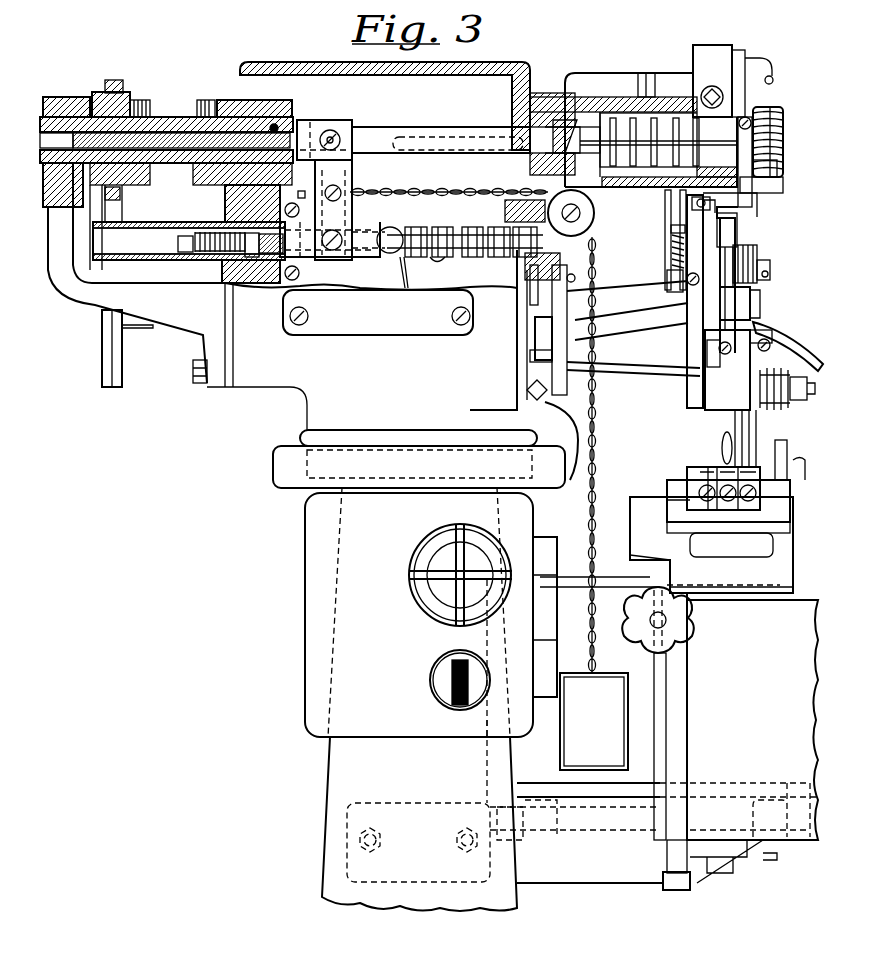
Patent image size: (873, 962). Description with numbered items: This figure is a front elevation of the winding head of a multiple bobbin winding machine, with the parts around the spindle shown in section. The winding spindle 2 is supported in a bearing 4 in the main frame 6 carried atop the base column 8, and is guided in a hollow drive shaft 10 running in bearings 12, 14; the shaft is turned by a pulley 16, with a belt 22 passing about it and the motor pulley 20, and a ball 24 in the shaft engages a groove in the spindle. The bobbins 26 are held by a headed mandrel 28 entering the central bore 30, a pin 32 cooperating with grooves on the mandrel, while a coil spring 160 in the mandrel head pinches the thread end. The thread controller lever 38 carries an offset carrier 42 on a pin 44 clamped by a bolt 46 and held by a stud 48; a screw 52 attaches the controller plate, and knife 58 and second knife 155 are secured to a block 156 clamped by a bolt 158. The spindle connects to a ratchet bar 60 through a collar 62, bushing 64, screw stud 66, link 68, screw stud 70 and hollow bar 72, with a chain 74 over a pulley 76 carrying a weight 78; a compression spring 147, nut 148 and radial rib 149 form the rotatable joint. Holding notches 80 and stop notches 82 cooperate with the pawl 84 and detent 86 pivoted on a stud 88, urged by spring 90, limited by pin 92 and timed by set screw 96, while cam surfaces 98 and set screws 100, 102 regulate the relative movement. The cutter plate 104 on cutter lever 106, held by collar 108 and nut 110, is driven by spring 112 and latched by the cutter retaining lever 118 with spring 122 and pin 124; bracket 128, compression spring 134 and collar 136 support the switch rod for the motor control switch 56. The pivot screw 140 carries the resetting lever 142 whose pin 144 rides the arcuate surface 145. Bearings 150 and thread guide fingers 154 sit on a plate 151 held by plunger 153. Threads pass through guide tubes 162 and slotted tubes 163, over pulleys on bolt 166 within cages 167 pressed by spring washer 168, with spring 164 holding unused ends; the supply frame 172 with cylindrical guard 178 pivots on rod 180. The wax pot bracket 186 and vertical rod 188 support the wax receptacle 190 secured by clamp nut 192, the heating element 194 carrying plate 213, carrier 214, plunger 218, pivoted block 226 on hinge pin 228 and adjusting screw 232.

The winding spindle 2 is at (412, 135).
The bearing 4 is at (520, 112).
The main frame 6 is at (424, 330).
The base column 8 is at (419, 702).
The hollow drive shaft 10 is at (166, 130).
The bearing 12 is at (68, 97).
The bearing 14 is at (226, 98).
The pulley 16 is at (112, 95).
The pulley 20 is at (102, 330).
The belt 22 is at (108, 365).
The ball 24 is at (278, 124).
The bobbins 26 is at (632, 118).
The headed mandrel 28 is at (545, 137).
The central bore 30 is at (558, 118).
The pin 32 is at (512, 165).
The lever 38 is at (690, 367).
The offset carrier 42 is at (735, 214).
The pin 44 is at (665, 204).
The bolt 46 is at (692, 206).
The stud 48 is at (738, 240).
The screw 52 is at (752, 118).
The motor control switch 56 is at (610, 73).
The knife 58 is at (783, 130).
The ratchet bar 60 is at (390, 253).
The collar 62 is at (312, 122).
The bushing 64 is at (345, 125).
The screw stud 66 is at (342, 142).
The link 68 is at (343, 172).
The screw stud 70 is at (330, 232).
The hollow bar 72 is at (340, 258).
The chain 74 is at (424, 190).
The pulley 76 is at (572, 190).
The weight 78 is at (594, 721).
The holding notches 80 is at (440, 259).
The stop notches 82 is at (440, 228).
The pawl 84 is at (524, 268).
The detent 86 is at (535, 335).
The stud 88 is at (530, 356).
The spring 90 is at (530, 312).
The pin 92 is at (576, 278).
The set screw 96 is at (520, 296).
The cam surfaces 98 is at (406, 287).
The set screw 100 is at (301, 191).
The set screw 102 is at (305, 297).
The cutter plate 104 is at (752, 298).
The cutter lever 106 is at (755, 308).
The collar 108 is at (787, 445).
The nut 110 is at (800, 400).
The spring 112 is at (782, 412).
The cutter retaining lever 118 is at (667, 275).
The spring 122 is at (680, 325).
The pin 124 is at (680, 305).
The bracket 128 is at (680, 284).
The compression spring 134 is at (672, 245).
The collar 136 is at (671, 229).
The pivot screw 140 is at (810, 400).
The resetting lever 142 is at (745, 428).
The pin 144 is at (726, 362).
The arcuate surface 145 is at (755, 345).
The compression spring 147 is at (198, 232).
The nut 148 is at (190, 251).
The radial rib 149 is at (385, 230).
The bearings 150 is at (742, 56).
The plate 151 is at (700, 52).
The spring-pressed plunger 153 is at (652, 65).
The thread guide fingers 154 is at (771, 76).
The second knife 155 is at (778, 160).
The block 156 is at (752, 196).
The bolt 158 is at (783, 181).
The coil spring 160 is at (780, 104).
The guide tubes 162 is at (805, 358).
The slotted tubes 163 is at (790, 462).
The spring 164 is at (772, 334).
The bolt 166 is at (770, 276).
The thread retaining cage 167 is at (757, 252).
The spring washer 168 is at (770, 264).
The supply frame 172 is at (517, 790).
The cylindrical guard 178 is at (537, 653).
The horizontal rod 180 is at (606, 835).
The bracket 186 is at (666, 545).
The vertical rod 188 is at (668, 885).
The wax receptacle 190 is at (736, 716).
The clamp nut 192 is at (693, 620).
The heating element 194 is at (680, 555).
The plate 213 is at (773, 548).
The carrier 214 is at (790, 528).
The spring-pressed plunger 218 is at (790, 510).
The pivoted block 226 is at (700, 480).
The hinge pin 228 is at (687, 490).
The adjusting screw 232 is at (742, 452).